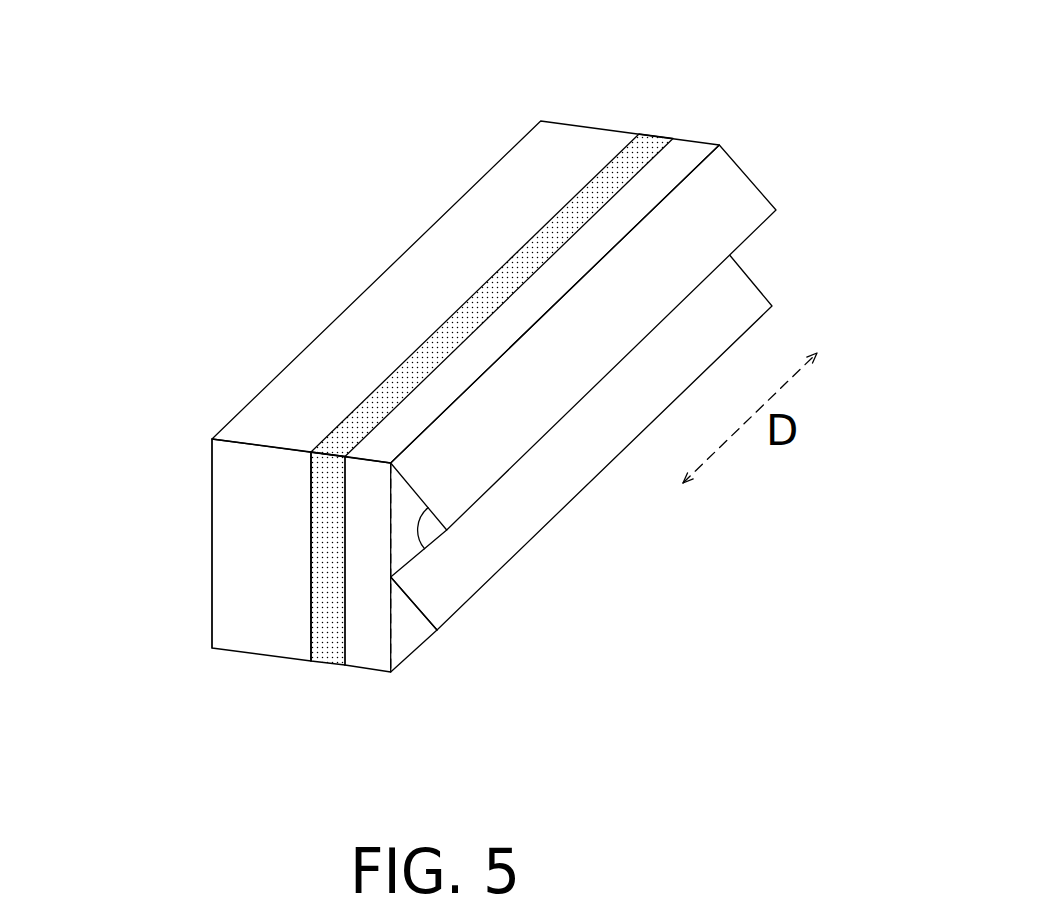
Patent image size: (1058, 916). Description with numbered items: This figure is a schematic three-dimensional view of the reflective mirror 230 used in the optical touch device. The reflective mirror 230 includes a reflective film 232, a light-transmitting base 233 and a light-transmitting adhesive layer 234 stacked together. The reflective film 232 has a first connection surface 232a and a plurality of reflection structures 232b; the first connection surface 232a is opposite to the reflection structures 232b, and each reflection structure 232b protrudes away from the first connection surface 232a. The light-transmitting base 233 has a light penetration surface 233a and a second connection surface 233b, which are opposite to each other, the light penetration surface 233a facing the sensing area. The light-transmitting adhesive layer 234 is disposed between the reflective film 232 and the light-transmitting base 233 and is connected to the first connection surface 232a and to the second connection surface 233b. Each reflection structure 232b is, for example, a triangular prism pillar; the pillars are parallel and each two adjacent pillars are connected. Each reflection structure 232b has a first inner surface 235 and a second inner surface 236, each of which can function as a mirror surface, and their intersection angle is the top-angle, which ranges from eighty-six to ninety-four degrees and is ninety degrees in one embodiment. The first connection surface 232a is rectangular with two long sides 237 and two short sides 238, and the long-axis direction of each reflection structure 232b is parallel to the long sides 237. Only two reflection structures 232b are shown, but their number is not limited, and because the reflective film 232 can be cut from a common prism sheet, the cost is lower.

The reflective mirror 230 is at (823, 654).
The reflective film 232 is at (699, 134).
The first connection surface 232a is at (355, 646).
The reflection structures 232b is at (553, 518).
The light-transmitting base 233 is at (223, 553).
The light penetration surface 233a is at (212, 475).
The second connection surface 233b is at (310, 622).
The light-transmitting adhesive layer 234 is at (325, 651).
The first inner surface 235 is at (390, 653).
The second inner surface 236 is at (407, 615).
The long sides 237 is at (488, 317).
The short sides 238 is at (343, 487).